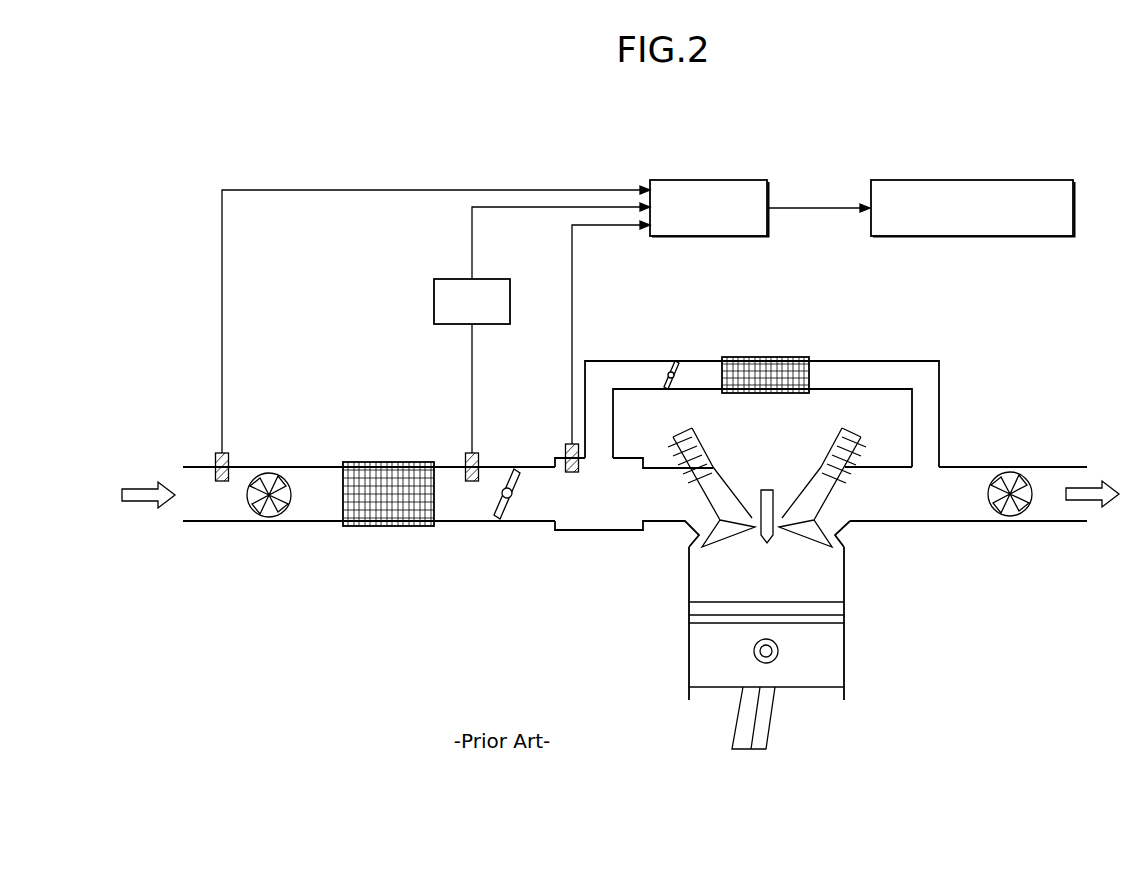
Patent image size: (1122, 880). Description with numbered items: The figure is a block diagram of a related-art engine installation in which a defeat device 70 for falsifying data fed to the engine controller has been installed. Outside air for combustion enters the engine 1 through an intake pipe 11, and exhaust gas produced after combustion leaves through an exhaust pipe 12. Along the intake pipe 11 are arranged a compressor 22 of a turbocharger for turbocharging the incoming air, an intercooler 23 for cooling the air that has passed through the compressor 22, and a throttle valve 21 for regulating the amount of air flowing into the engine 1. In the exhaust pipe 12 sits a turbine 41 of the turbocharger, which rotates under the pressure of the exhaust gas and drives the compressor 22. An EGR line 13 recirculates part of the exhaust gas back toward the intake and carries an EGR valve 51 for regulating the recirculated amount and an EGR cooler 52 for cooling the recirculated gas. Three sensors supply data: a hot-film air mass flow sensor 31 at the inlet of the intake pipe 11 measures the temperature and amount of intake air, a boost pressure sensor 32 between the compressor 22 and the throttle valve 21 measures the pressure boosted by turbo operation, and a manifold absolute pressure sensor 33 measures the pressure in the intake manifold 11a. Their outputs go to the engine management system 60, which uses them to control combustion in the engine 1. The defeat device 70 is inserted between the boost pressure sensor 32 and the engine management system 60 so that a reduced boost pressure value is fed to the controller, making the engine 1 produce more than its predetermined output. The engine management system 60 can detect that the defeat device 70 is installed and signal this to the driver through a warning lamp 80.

The engine 1 is at (844, 633).
The intake pipe 11 is at (308, 522).
The intake manifold 11a is at (598, 531).
The exhaust pipe 12 is at (1048, 523).
The EGR line 13 is at (862, 360).
The throttle valve 21 is at (510, 500).
The compressor 22 is at (273, 477).
The intercooler 23 is at (373, 473).
The hot-film air mass flow sensor (HFM) 31 is at (215, 453).
The boost pressure sensor 32 is at (467, 452).
The manifold absolute pressure (MAP) sensor 33 is at (563, 440).
The turbine 41 is at (1022, 473).
The EGR valve 51 is at (672, 362).
The EGR cooler 52 is at (770, 363).
The engine management system (EMS) 60 is at (712, 178).
The defeat device 70 is at (434, 302).
The warning lamp 80 is at (975, 178).